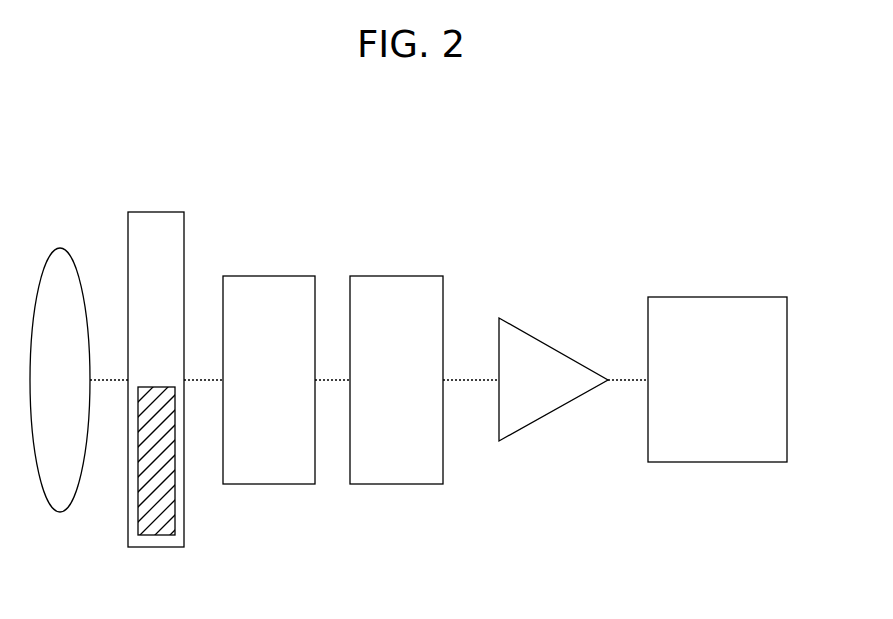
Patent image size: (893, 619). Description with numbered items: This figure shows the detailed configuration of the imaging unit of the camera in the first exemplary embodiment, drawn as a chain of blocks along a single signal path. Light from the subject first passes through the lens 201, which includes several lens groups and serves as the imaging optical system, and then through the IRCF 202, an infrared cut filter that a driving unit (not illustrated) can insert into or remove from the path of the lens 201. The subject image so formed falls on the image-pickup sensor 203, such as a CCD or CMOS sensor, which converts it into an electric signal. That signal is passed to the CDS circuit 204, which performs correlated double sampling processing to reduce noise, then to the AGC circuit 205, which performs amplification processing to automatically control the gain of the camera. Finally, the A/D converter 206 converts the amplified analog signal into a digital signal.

The lens 201 is at (60, 248).
The IRCF 202 is at (156, 212).
The image-pickup sensor 203 is at (272, 276).
The CDS circuit 204 is at (395, 276).
The AGC circuit 205 is at (553, 347).
The A/D converter 206 is at (717, 297).